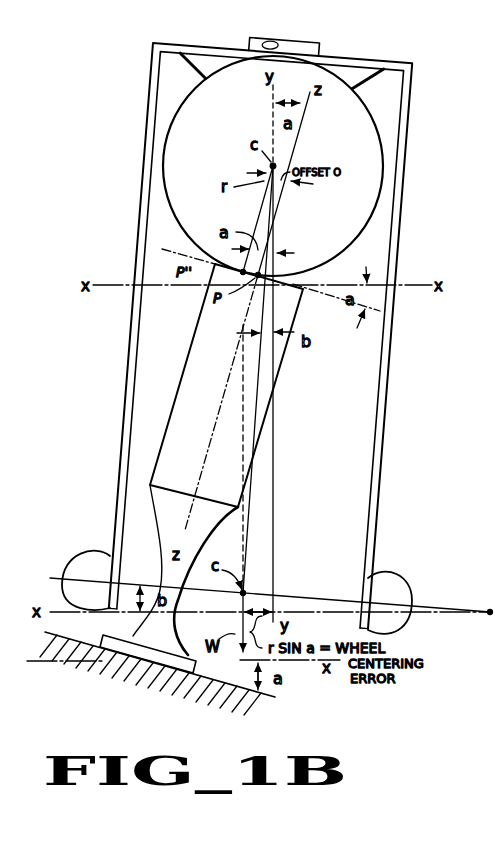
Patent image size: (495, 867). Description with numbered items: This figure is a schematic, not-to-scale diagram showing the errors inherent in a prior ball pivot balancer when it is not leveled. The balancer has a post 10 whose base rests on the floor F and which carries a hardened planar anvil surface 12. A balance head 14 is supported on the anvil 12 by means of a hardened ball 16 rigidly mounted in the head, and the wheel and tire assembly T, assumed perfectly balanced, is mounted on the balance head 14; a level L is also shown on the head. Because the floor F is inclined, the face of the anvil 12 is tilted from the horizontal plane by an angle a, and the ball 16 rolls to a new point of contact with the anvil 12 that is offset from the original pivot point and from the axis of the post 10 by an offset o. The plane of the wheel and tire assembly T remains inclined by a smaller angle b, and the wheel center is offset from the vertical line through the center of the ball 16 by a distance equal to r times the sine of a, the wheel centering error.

The post 10 is at (188, 357).
The anvil surface 12 is at (293, 284).
The balance head 14 is at (142, 188).
The hardened ball 16 is at (172, 207).
The level L is at (319, 44).
The wheel and tire assembly T is at (402, 578).
The floor F is at (96, 640).